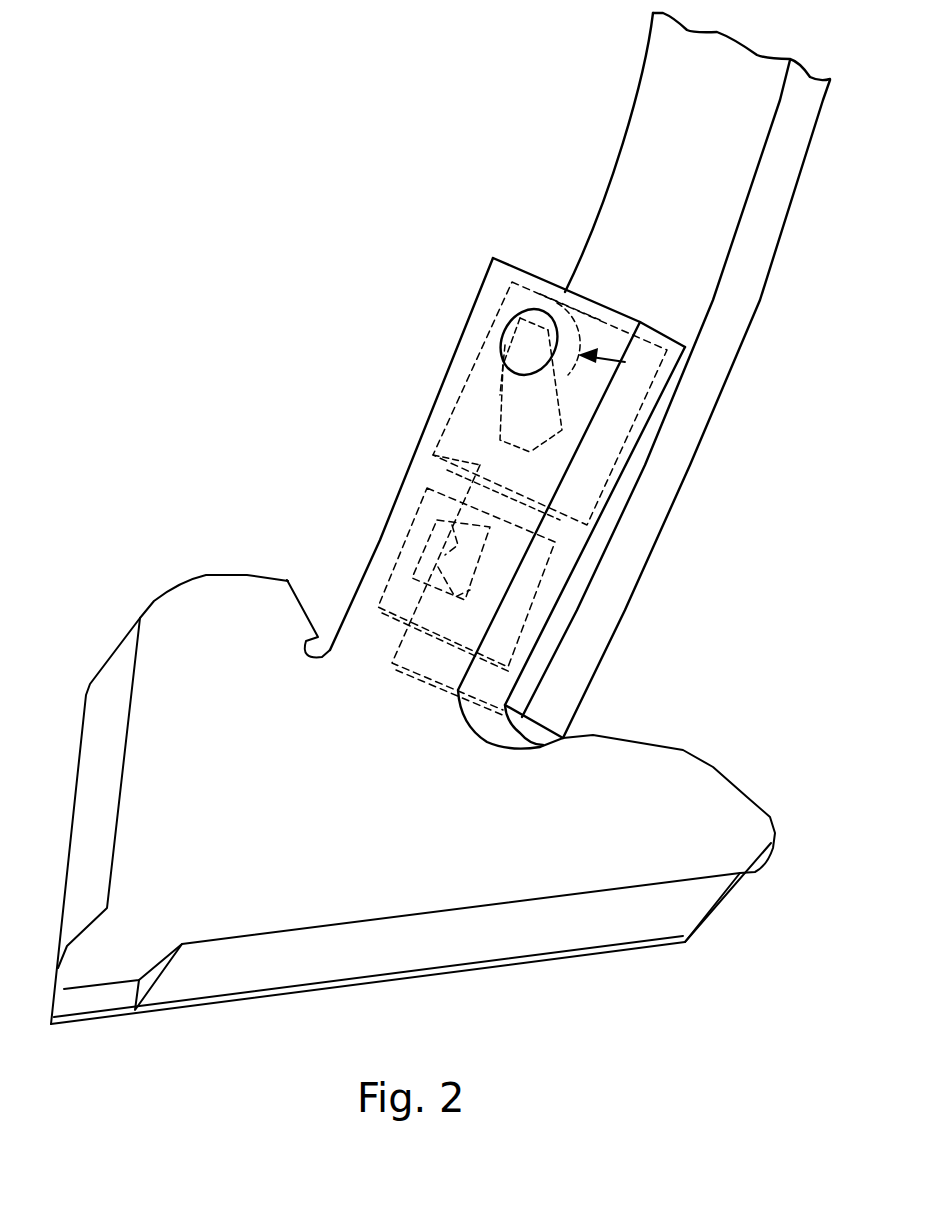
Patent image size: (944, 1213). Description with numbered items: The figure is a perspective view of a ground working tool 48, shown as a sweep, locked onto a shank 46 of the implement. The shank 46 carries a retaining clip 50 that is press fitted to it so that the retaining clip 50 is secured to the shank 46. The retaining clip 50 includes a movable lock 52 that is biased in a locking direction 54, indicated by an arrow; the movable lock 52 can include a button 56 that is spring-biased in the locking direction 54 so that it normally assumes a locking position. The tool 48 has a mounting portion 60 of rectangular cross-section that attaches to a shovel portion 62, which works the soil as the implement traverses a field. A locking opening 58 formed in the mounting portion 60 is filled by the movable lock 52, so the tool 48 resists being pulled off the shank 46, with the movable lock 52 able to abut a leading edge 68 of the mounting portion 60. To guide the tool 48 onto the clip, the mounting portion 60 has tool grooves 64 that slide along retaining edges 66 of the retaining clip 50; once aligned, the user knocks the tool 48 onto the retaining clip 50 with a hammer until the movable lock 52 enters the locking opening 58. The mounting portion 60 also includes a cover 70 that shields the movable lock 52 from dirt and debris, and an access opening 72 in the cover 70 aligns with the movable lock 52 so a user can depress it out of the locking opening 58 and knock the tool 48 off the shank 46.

The shank 46 is at (748, 313).
The tool 48 is at (437, 887).
The retaining clip 50 is at (527, 518).
The movable lock 52 is at (520, 407).
The locking direction 54 is at (603, 360).
The button 56 is at (530, 337).
The locking opening 58 is at (508, 375).
The mounting portion 60 is at (437, 437).
The shovel portion 62 is at (295, 620).
The tool grooves 64 is at (468, 458).
The retaining edges 66 is at (568, 520).
The leading edge 68 is at (567, 305).
The cover 70 is at (465, 430).
The access opening 72 is at (513, 320).